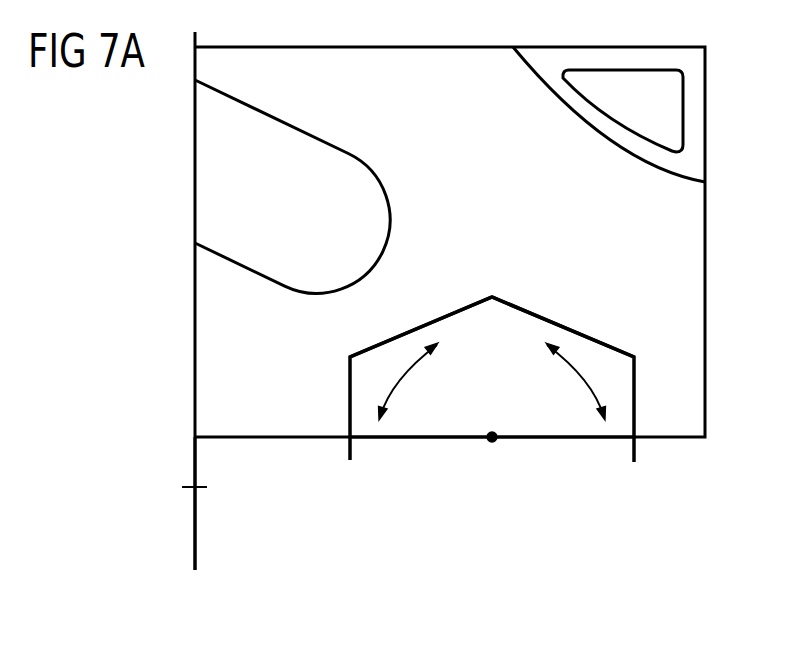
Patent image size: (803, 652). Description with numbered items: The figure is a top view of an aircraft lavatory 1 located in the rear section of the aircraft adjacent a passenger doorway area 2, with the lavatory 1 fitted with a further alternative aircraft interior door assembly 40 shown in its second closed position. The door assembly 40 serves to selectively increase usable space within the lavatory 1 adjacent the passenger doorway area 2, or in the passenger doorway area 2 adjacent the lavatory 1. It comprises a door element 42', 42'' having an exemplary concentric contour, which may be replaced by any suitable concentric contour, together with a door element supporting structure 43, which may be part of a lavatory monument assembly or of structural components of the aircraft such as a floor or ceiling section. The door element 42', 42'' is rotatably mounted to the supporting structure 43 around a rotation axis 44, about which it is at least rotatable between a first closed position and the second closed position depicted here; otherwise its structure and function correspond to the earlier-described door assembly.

The lavatory 1 is at (492, 198).
The passenger doorway area 2 is at (447, 601).
The aircraft interior door assembly 40 is at (375, 485).
The door element 42' is at (421, 343).
The door element 42'' is at (563, 343).
The door element supporting structure 43 is at (452, 439).
The rotation axis 44 is at (491, 432).